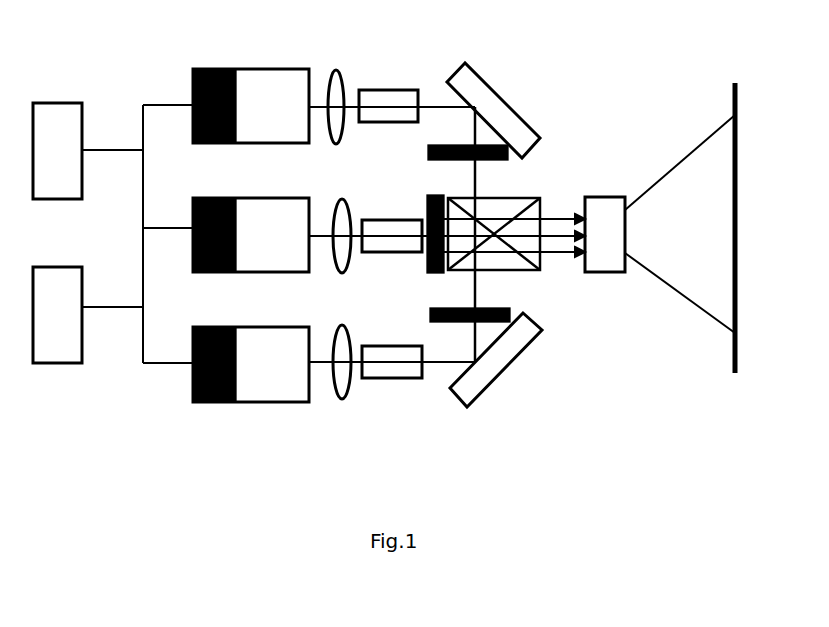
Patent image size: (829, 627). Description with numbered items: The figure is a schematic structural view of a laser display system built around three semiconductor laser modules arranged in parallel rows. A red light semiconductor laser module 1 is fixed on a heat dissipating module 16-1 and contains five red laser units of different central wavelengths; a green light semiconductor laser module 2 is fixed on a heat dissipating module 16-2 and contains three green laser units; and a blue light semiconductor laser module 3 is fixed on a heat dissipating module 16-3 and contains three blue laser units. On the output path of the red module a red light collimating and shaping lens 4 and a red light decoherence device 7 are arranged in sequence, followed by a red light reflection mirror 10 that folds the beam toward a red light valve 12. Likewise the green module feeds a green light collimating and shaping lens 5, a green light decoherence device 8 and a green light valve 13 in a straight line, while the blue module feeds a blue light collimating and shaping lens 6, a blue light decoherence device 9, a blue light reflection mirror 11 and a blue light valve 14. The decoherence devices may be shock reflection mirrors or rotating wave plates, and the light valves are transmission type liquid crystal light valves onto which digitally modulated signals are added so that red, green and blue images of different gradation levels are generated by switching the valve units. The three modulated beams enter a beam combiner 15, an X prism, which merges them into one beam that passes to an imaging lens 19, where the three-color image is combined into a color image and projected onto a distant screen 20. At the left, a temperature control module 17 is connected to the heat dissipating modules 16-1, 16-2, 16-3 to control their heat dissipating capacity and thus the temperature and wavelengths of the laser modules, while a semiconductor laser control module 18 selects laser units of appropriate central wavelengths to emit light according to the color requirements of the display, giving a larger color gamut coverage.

The red light semiconductor laser module 1 is at (280, 69).
The green light semiconductor laser module 2 is at (280, 155).
The blue light semiconductor laser module 3 is at (289, 283).
The red light collimating and shaping lens 4 is at (336, 69).
The green light collimating and shaping lens 5 is at (342, 198).
The blue light collimating and shaping lens 6 is at (342, 327).
The red light decoherence device 7 is at (387, 90).
The green light decoherence device 8 is at (383, 220).
The blue light decoherence device 9 is at (390, 346).
The red light reflection mirror 10 is at (492, 40).
The blue light reflection mirror 11 is at (493, 387).
The red light valve 12 is at (493, 160).
The green light valve 13 is at (430, 172).
The blue light valve 14 is at (498, 298).
The beam combiner 15 is at (520, 210).
The heat dissipating module 16-1 is at (202, 69).
The heat dissipating module 16-2 is at (215, 155).
The heat dissipating module 16-3 is at (217, 283).
The temperature control module 17 is at (56, 103).
The semiconductor laser control module 18 is at (56, 267).
The imaging lens 19 is at (613, 197).
The screen 20 is at (735, 82).